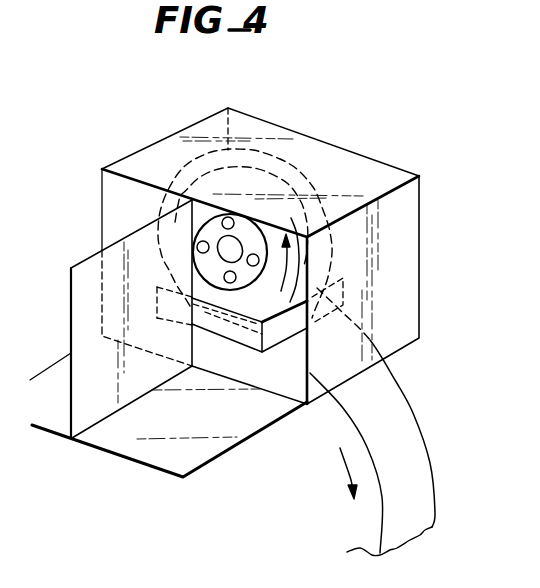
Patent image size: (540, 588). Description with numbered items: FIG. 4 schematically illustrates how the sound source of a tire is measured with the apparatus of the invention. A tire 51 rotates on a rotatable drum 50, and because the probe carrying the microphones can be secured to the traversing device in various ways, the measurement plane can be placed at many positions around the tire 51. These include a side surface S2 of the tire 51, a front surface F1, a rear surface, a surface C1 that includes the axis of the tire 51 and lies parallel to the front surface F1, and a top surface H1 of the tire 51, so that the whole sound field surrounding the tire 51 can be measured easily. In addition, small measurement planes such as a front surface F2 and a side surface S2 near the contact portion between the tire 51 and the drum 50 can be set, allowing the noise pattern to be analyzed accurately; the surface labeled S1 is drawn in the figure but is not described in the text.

The rotatable drum 50 is at (420, 470).
The tire 51 is at (308, 205).
The top surface H1 is at (260, 172).
The front face S1 is at (204, 286).
The side surface S2 is at (174, 306).
The surface including tire axis C1 is at (131, 319).
The front surface F1 is at (304, 260).
The front surface near contact portion F2 is at (267, 315).